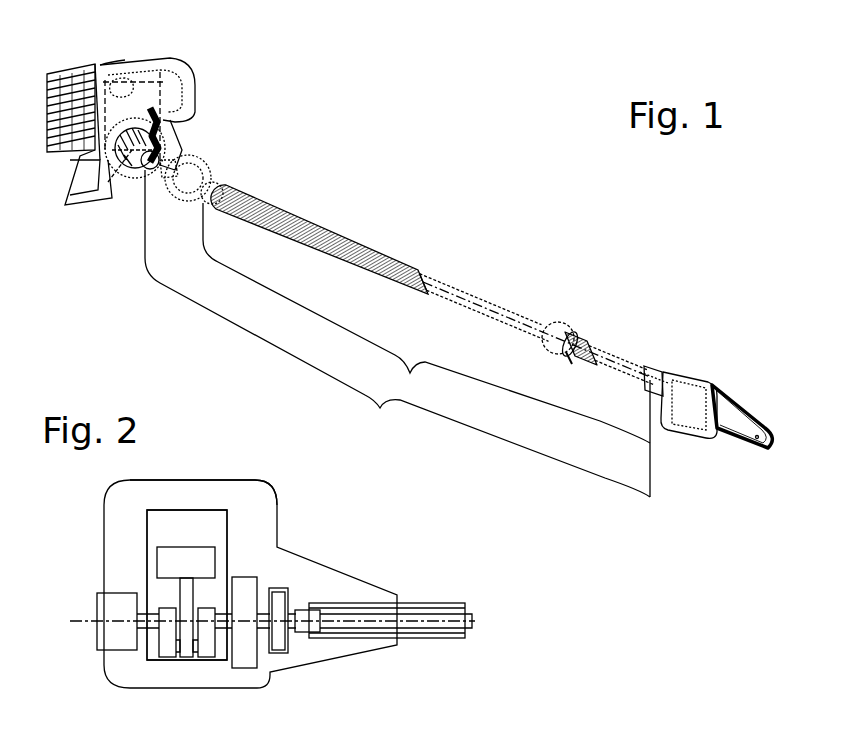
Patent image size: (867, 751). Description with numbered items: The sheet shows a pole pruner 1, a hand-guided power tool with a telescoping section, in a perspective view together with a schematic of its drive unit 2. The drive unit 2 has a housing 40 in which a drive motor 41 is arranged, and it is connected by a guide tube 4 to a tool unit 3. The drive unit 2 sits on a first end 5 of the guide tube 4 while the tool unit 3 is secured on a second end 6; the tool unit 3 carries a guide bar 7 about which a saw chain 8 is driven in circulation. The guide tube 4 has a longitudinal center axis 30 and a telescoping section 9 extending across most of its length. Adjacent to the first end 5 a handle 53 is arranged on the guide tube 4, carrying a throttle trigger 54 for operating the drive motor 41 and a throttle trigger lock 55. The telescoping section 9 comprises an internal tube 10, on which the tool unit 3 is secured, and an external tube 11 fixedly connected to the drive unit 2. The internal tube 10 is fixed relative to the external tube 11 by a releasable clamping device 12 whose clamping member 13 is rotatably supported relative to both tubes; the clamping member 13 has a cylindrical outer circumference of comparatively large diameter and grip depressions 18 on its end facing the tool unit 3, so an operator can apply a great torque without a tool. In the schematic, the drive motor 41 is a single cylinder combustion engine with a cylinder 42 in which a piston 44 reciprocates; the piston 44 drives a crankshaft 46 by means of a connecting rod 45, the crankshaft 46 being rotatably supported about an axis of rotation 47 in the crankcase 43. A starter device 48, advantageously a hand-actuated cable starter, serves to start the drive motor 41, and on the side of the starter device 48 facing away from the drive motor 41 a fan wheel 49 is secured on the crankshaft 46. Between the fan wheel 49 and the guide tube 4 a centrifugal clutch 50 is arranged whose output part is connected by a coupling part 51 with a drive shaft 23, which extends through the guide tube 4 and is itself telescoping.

In FIG. 1, the pole pruner 1 is at (460, 106).
In FIG. 1, the drive unit 2 is at (203, 86).
In FIG. 2, the drive unit 2 is at (335, 528).
In FIG. 1, the tool unit 3 is at (697, 368).
In FIG. 1, the guide tube 4 is at (397, 333).
In FIG. 2, the guide tube 4 is at (448, 592).
In FIG. 1, the first end 5 is at (144, 169).
In FIG. 1, the second end 6 is at (652, 372).
In FIG. 1, the guide bar 7 is at (732, 420).
In FIG. 1, the saw chain 8 is at (733, 402).
In FIG. 1, the telescoping section 9 is at (426, 323).
In FIG. 1, the internal tube 10 is at (602, 371).
In FIG. 1, the external tube 11 is at (472, 296).
In FIG. 1, the clamping device 12 is at (590, 330).
In FIG. 1, the clamping member 13 is at (562, 336).
In FIG. 1, the grip depressions 18 is at (570, 375).
In FIG. 2, the drive shaft 23 is at (417, 625).
In FIG. 1, the longitudinal center axis 30 is at (393, 273).
In FIG. 1, the housing 40 is at (140, 68).
In FIG. 2, the housing 40 is at (244, 480).
In FIG. 1, the drive motor 41 is at (105, 100).
In FIG. 2, the drive motor 41 is at (197, 506).
In FIG. 2, the cylinder 42 is at (228, 532).
In FIG. 2, the crankcase 43 is at (209, 663).
In FIG. 2, the piston 44 is at (165, 553).
In FIG. 2, the connecting rod 45 is at (185, 602).
In FIG. 2, the crankshaft 46 is at (156, 626).
In FIG. 2, the axis of rotation 47 is at (84, 624).
In FIG. 2, the starter device 48 is at (106, 603).
In FIG. 2, the fan wheel 49 is at (245, 655).
In FIG. 2, the centrifugal clutch 50 is at (279, 655).
In FIG. 2, the coupling part 51 is at (313, 613).
In FIG. 1, the handle 53 is at (162, 171).
In FIG. 1, the throttle trigger 54 is at (187, 201).
In FIG. 1, the throttle trigger lock 55 is at (168, 167).